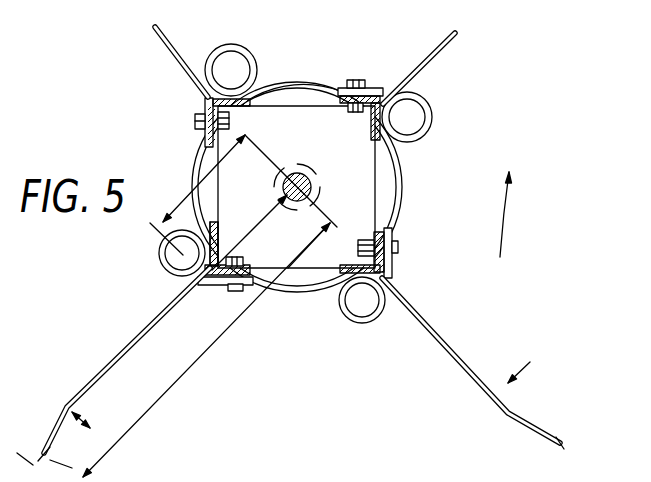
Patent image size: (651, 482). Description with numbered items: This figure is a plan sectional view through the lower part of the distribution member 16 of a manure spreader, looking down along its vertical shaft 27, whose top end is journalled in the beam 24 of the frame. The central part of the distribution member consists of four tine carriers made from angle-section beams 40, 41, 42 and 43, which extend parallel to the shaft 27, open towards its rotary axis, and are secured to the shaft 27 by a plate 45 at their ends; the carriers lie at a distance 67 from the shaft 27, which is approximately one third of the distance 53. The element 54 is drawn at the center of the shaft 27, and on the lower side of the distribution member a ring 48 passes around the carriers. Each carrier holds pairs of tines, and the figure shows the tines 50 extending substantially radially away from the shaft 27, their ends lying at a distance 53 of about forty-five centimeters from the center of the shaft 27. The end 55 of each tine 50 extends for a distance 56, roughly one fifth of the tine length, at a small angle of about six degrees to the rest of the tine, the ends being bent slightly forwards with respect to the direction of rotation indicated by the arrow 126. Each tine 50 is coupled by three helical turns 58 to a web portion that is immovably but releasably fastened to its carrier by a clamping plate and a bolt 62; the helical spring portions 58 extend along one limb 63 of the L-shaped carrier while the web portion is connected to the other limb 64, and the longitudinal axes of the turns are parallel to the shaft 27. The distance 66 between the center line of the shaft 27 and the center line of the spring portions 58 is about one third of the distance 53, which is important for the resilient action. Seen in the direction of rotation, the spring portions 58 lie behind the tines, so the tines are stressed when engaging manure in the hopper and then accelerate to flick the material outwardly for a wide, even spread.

The distribution member 16 is at (524, 361).
The beam 24 is at (344, 471).
The vertical shaft 27 is at (292, 175).
The tine carrier 40 is at (205, 101).
The tine carrier 41 is at (372, 125).
The tine carrier 42 is at (345, 267).
The tine carrier 43 is at (222, 262).
The plate 45 is at (272, 108).
The ring 48 is at (398, 163).
The tine 50 is at (156, 24).
The distance 53 is at (211, 347).
The shaft axis 54 is at (312, 180).
The end of the tine 55 is at (58, 425).
The distance 56 is at (73, 454).
The helical turns 58 is at (268, 33).
The bolt 62 is at (352, 81).
The limb 63 is at (249, 229).
The limb 64 is at (248, 282).
The distance 66 is at (190, 198).
The distance 67 is at (256, 232).
The arrow 126 is at (505, 242).